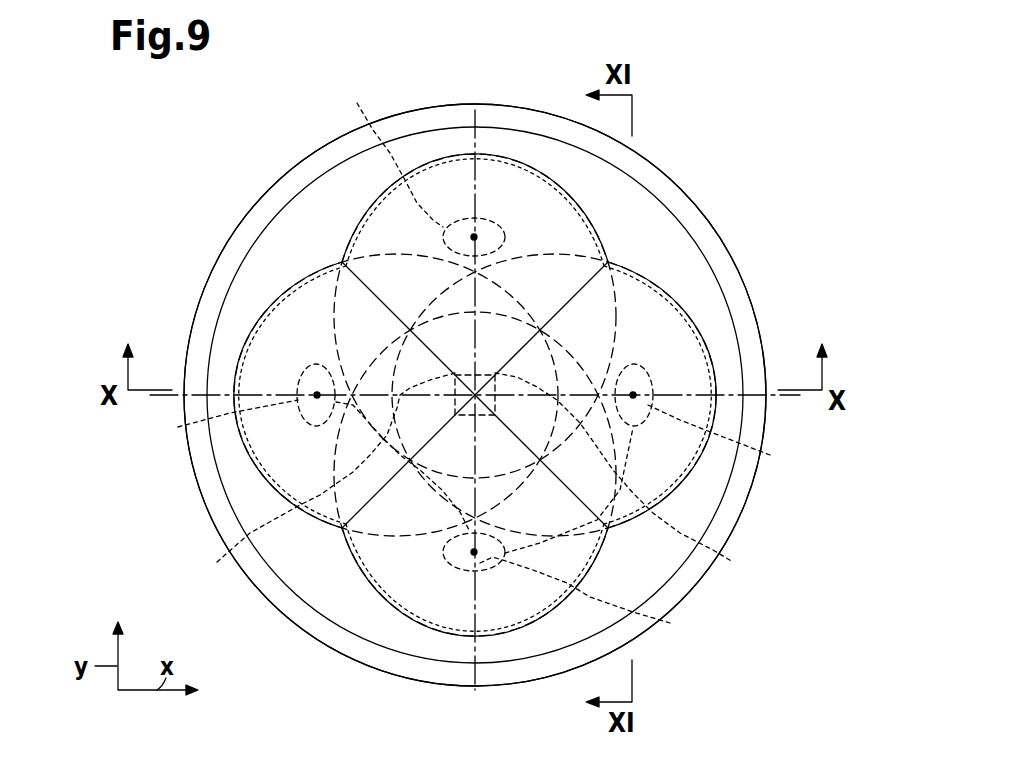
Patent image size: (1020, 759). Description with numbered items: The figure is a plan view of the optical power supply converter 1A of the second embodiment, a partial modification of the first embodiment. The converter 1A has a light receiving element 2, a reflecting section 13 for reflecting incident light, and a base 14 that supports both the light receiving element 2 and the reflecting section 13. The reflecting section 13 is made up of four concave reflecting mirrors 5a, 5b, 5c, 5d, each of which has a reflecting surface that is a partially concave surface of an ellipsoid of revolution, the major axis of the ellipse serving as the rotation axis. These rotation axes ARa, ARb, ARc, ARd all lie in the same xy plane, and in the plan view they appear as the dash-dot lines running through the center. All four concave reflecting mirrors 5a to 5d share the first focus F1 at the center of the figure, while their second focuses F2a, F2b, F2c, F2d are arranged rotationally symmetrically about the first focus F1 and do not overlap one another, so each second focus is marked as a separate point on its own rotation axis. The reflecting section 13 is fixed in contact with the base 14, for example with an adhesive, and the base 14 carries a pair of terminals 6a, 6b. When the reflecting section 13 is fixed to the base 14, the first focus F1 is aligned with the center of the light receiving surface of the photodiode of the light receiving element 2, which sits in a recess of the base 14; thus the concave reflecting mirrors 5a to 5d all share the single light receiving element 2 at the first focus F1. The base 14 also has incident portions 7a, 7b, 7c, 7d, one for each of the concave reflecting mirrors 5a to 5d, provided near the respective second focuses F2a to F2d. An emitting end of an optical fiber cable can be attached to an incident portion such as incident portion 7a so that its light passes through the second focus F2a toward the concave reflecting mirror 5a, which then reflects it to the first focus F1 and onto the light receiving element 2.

The optical power supply converter 1A is at (252, 160).
The light receiving element 2 is at (348, 235).
The reflecting section 13 is at (677, 204).
The base 14 is at (651, 152).
The concave reflecting mirror 5a is at (668, 299).
The concave reflecting mirror 5b is at (422, 174).
The concave reflecting mirror 5c is at (253, 446).
The concave reflecting mirror 5d is at (398, 604).
The terminal 6a is at (632, 479).
The terminal 6b is at (317, 471).
The incident portion 7a is at (730, 440).
The incident portion 7b is at (388, 150).
The incident portion 7c is at (306, 466).
The incident portion 7d is at (594, 537).
The rotation axis ARa is at (681, 393).
The rotation axis ARb is at (472, 205).
The rotation axis ARc is at (266, 390).
The rotation axis ARd is at (475, 599).
The first focus F1 is at (486, 368).
The second focus F2a is at (651, 373).
The second focus F2b is at (486, 212).
The second focus F2c is at (301, 373).
The second focus F2d is at (495, 574).